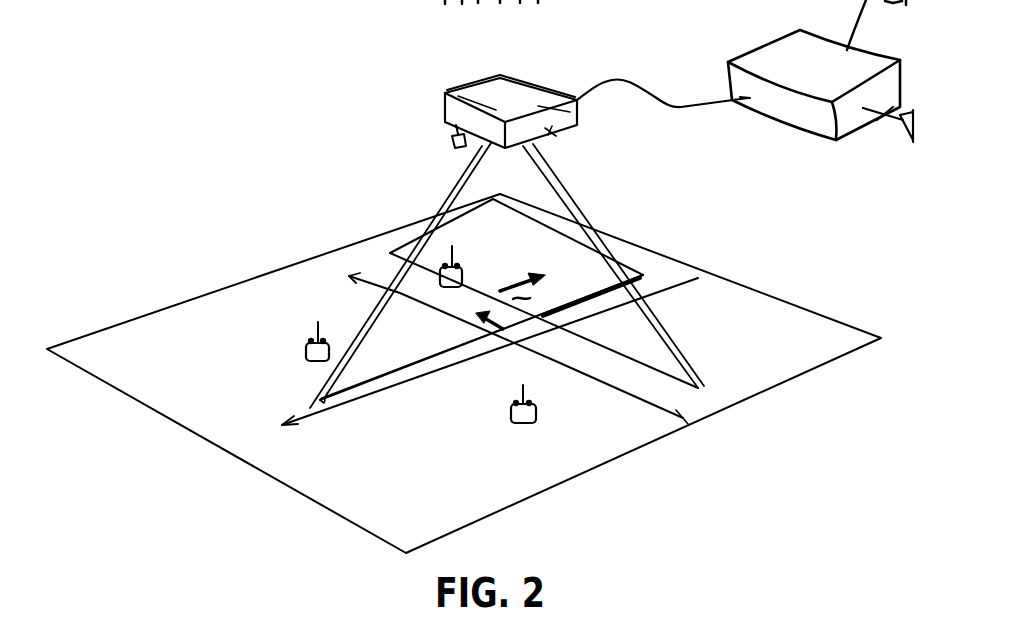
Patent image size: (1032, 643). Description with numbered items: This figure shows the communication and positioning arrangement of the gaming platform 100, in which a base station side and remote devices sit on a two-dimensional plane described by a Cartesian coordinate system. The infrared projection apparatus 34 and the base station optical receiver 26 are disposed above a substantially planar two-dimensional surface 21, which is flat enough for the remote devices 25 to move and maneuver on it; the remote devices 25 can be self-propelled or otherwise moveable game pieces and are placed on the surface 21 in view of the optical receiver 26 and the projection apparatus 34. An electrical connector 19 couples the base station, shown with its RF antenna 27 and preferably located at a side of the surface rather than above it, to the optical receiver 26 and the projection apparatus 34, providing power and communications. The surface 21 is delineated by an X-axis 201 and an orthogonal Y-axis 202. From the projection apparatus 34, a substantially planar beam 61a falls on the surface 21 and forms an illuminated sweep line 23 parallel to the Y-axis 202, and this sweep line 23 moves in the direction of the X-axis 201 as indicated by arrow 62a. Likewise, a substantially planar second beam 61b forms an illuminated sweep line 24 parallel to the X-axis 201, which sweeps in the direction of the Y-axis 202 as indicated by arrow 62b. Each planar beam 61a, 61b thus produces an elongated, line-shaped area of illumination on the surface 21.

The gaming platform 100 is at (349, 205).
The substantially planar two-dimensional surface 21 is at (424, 536).
The infrared projection apparatus 34 is at (447, 91).
The base station optical receiver 26 is at (453, 141).
The electrical connector 19 is at (627, 78).
The RF antenna 27 is at (890, 126).
The substantially planar beam 61a is at (607, 236).
The substantially planar second beam 61b is at (677, 348).
The Y-axis 202 is at (657, 290).
The X-axis 201 is at (673, 412).
The illuminated sweep line 23 is at (390, 377).
The illuminated sweep line 24 is at (576, 297).
The arrow 62a is at (485, 321).
The arrow 62b is at (503, 287).
The remote devices 25 is at (466, 277).